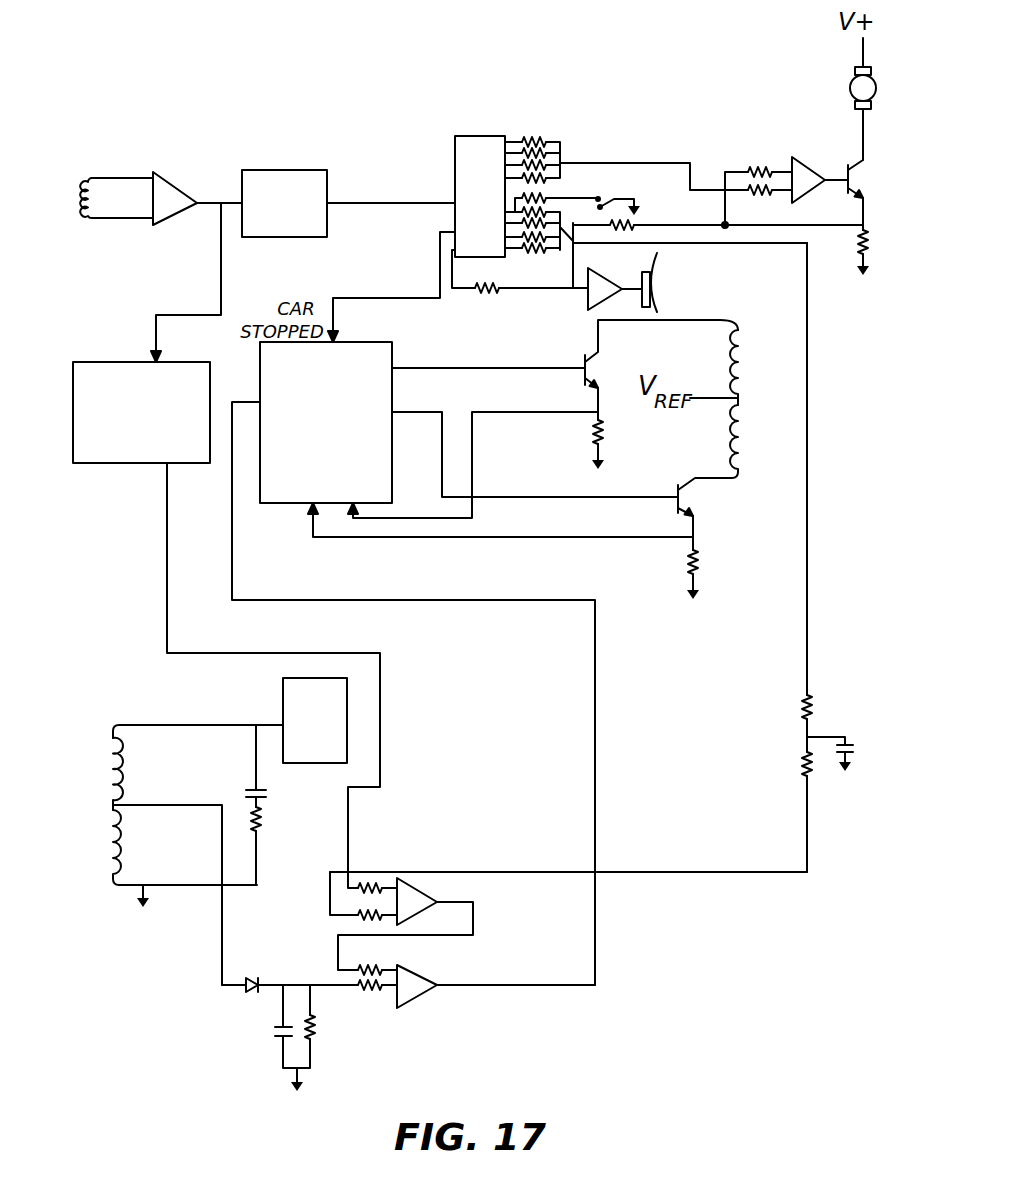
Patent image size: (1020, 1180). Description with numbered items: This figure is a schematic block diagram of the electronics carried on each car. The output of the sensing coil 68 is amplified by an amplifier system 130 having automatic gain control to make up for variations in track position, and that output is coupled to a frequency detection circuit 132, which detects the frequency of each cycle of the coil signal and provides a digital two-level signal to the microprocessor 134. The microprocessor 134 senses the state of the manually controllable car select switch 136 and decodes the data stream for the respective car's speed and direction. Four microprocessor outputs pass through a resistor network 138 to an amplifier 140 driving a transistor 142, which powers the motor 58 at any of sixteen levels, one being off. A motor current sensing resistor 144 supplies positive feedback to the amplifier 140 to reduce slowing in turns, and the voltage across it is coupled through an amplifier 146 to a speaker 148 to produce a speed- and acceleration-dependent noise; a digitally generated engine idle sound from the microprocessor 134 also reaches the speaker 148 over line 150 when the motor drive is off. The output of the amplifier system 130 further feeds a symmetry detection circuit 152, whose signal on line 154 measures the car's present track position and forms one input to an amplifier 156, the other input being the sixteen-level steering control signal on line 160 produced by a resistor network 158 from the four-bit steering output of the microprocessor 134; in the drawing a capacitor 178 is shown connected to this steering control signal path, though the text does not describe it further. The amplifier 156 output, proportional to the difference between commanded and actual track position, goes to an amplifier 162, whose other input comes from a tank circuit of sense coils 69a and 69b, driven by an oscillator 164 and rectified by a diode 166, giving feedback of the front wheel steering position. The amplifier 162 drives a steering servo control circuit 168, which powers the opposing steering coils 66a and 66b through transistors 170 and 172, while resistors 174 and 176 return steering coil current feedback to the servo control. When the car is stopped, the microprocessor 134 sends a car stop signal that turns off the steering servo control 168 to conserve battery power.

The motor 58 is at (851, 80).
The steering coil 66a is at (762, 367).
The steering coil 66b is at (737, 447).
The sensing coil 68 is at (84, 186).
The sense coil 69a is at (106, 772).
The sense coil 69b is at (108, 843).
The amplifier system 130 is at (175, 185).
The frequency detection circuit 132 is at (307, 170).
The microprocessor 134 is at (487, 137).
The car select switch 136 is at (600, 198).
The resistor network 138 is at (542, 147).
The amplifier 140 is at (810, 160).
The transistor 142 is at (862, 178).
The motor current sensing resistor 144 is at (858, 256).
The amplifier 146 is at (586, 302).
The speaker 148 is at (660, 278).
The line 150 is at (476, 288).
The symmetry detection circuit 152 is at (108, 362).
The line 154 is at (170, 645).
The amplifier 156 is at (418, 882).
The resistor network 158 is at (563, 215).
The line 160 is at (808, 651).
The amplifier 162 is at (432, 979).
The oscillator 164 is at (347, 725).
The diode 166 is at (255, 975).
The steering servo control circuit 168 is at (392, 366).
The transistor 170 is at (583, 378).
The transistor 172 is at (683, 498).
The resistor 174 is at (603, 432).
The resistor 176 is at (700, 566).
The capacitor 178 is at (857, 758).